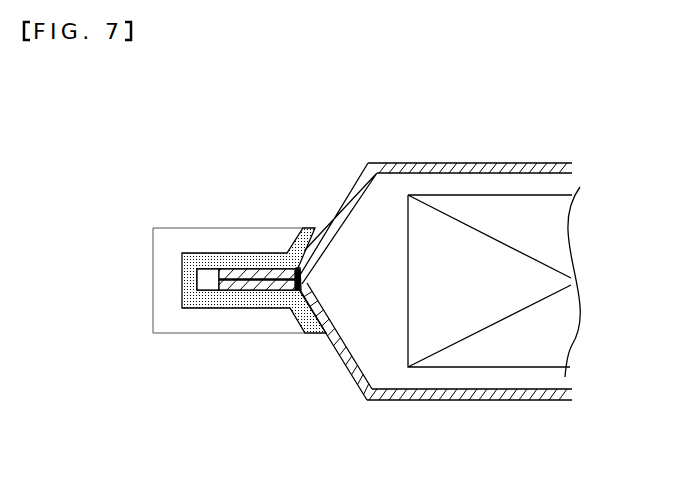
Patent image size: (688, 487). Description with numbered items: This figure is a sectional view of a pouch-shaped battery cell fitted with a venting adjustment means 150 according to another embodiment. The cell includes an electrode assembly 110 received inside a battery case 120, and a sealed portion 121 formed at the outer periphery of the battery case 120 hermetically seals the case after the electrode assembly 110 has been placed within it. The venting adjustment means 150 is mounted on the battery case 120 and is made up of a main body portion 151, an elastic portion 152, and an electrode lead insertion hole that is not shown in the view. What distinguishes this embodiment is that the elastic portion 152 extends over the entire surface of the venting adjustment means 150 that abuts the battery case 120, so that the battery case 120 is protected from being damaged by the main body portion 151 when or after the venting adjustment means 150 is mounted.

The electrode assembly 110 is at (552, 230).
The battery case 120 is at (481, 392).
The sealed portion 121 is at (300, 283).
The venting adjustment means 150 is at (169, 274).
The main body portion 151 is at (165, 243).
The elastic portion 152 is at (190, 277).